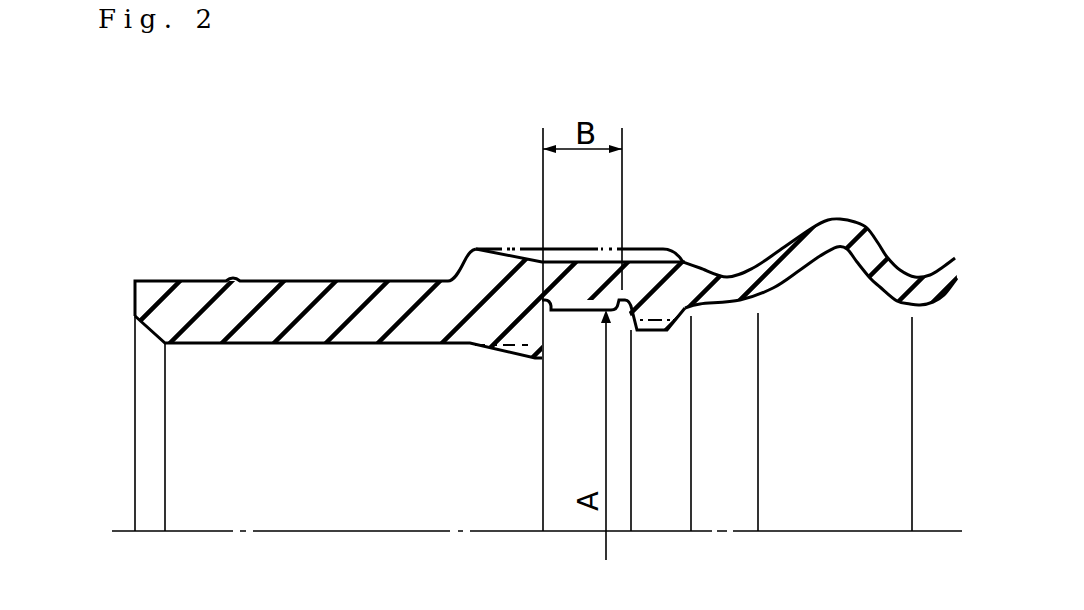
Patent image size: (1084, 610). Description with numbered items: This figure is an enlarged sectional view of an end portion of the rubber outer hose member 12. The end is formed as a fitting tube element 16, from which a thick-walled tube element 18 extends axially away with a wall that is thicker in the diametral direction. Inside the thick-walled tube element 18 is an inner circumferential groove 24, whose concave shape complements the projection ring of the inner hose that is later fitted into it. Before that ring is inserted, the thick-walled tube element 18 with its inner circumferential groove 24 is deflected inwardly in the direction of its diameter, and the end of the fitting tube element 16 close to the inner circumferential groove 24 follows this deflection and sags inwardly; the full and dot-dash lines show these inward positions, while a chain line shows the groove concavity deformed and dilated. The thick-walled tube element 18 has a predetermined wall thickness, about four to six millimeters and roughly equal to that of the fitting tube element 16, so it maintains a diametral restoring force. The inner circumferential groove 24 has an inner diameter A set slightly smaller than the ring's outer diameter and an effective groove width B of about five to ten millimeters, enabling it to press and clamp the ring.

The outer hose member 12 is at (799, 198).
The fitting tube element 16 is at (322, 293).
The thick-walled tube element 18 is at (567, 252).
The inner circumferential groove 24 is at (568, 312).